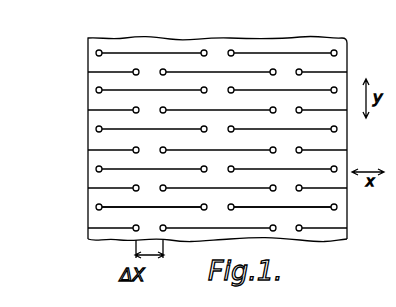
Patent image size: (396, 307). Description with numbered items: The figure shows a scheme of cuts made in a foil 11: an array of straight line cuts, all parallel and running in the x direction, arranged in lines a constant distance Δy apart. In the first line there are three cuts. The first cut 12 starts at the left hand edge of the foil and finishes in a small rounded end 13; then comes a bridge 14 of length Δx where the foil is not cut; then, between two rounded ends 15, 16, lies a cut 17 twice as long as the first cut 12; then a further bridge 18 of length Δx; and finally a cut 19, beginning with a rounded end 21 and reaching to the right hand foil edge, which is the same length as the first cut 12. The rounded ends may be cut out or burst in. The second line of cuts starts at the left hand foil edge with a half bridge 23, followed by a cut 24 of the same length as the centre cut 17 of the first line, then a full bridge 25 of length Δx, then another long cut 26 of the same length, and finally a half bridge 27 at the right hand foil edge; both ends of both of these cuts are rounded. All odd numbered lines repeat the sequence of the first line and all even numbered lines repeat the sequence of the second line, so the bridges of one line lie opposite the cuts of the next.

The foil 11 is at (88, 135).
The first cut 12 is at (105, 110).
The rounded end 13 is at (133, 70).
The bridge 14 is at (149, 72).
The rounded end 15 is at (166, 70).
The rounded end 16 is at (285, 73).
The cut 17 is at (271, 70).
The bridge 18 is at (301, 70).
The cut 19 is at (333, 72).
The rounded end 21 is at (334, 50).
The half bridge 23 is at (90, 203).
The cut 24 is at (128, 208).
The full bridge 25 is at (220, 168).
The long cut 26 is at (290, 208).
The half bridge 27 is at (338, 172).